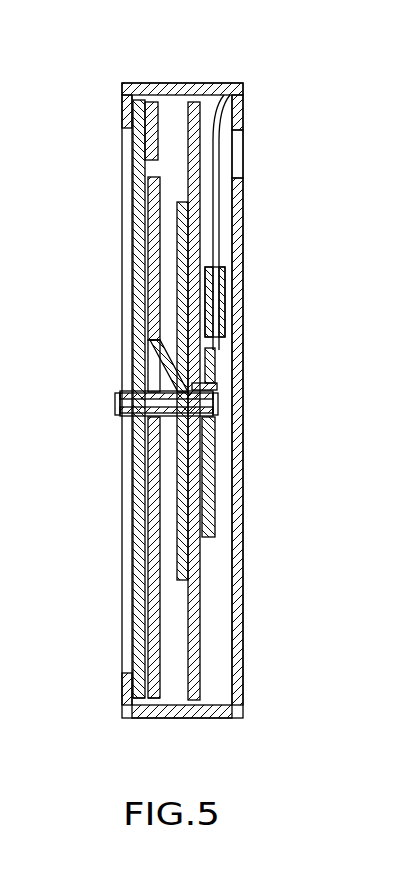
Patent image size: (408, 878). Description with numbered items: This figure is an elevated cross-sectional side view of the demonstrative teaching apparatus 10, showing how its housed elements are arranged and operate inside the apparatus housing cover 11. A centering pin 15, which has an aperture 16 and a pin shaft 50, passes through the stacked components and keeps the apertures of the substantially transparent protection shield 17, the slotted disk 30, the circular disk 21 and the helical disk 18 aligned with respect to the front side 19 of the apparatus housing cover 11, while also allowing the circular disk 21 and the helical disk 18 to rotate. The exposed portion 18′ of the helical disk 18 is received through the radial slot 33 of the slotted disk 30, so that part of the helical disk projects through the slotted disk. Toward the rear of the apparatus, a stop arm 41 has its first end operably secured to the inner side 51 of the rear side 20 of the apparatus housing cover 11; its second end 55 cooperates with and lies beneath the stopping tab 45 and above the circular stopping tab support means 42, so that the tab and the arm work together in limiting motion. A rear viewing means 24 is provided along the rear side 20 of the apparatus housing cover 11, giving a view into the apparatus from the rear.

The demonstrative teaching apparatus 10 is at (190, 62).
The apparatus housing cover 11 is at (135, 82).
The centering pin 15 is at (114, 392).
The aperture 16 is at (118, 404).
The substantially transparent protection shield 17 is at (132, 153).
The helical disk 18 is at (173, 483).
The exposed portion of helical disk 18′ is at (147, 282).
The front side of apparatus housing cover 19 is at (127, 208).
The rear side of apparatus housing cover 20 is at (244, 694).
The circular disk 21 is at (201, 610).
The rear viewing means 24 is at (244, 134).
The slotted disk 30 is at (147, 698).
The radial slot 33 is at (158, 168).
The stop arm 41 is at (227, 82).
The circular stopping tab support means 42 is at (224, 268).
The stopping tab 45 is at (227, 290).
The pin shaft 50 is at (218, 375).
The inner side of rear side 51 is at (226, 410).
The second end of stop arm 55 is at (215, 357).